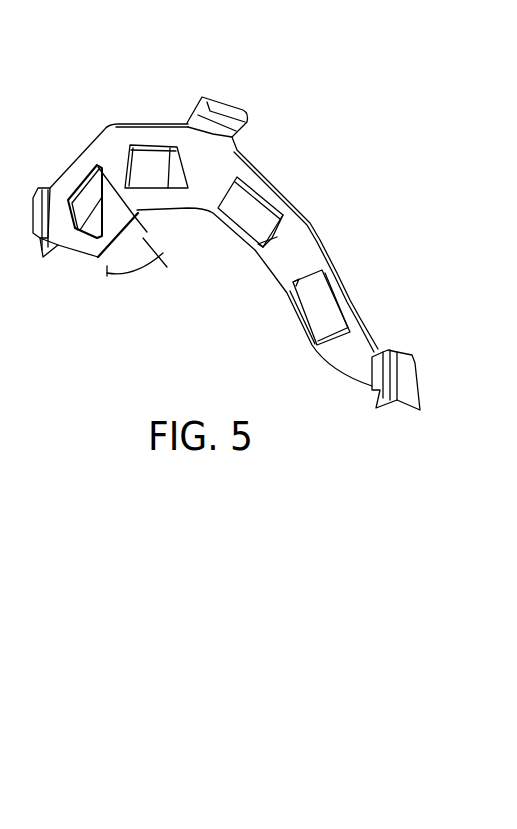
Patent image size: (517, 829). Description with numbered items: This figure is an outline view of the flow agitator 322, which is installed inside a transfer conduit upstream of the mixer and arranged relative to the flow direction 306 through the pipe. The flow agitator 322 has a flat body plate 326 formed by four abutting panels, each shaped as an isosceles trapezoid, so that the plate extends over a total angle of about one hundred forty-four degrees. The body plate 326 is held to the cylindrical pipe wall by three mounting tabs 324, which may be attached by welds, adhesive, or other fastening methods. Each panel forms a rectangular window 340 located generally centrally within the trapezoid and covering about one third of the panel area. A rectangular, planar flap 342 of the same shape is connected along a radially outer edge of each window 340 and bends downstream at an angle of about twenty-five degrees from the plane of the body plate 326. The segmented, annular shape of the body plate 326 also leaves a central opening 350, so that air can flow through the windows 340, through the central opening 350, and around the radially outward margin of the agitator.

The flow direction 306 is at (398, 333).
The flow agitator 322 is at (322, 150).
The mounting tabs 324 is at (33, 188).
The body plate 326 is at (298, 247).
The rectangular window 340 is at (112, 212).
The flap 342 is at (150, 172).
The central opening 350 is at (263, 287).